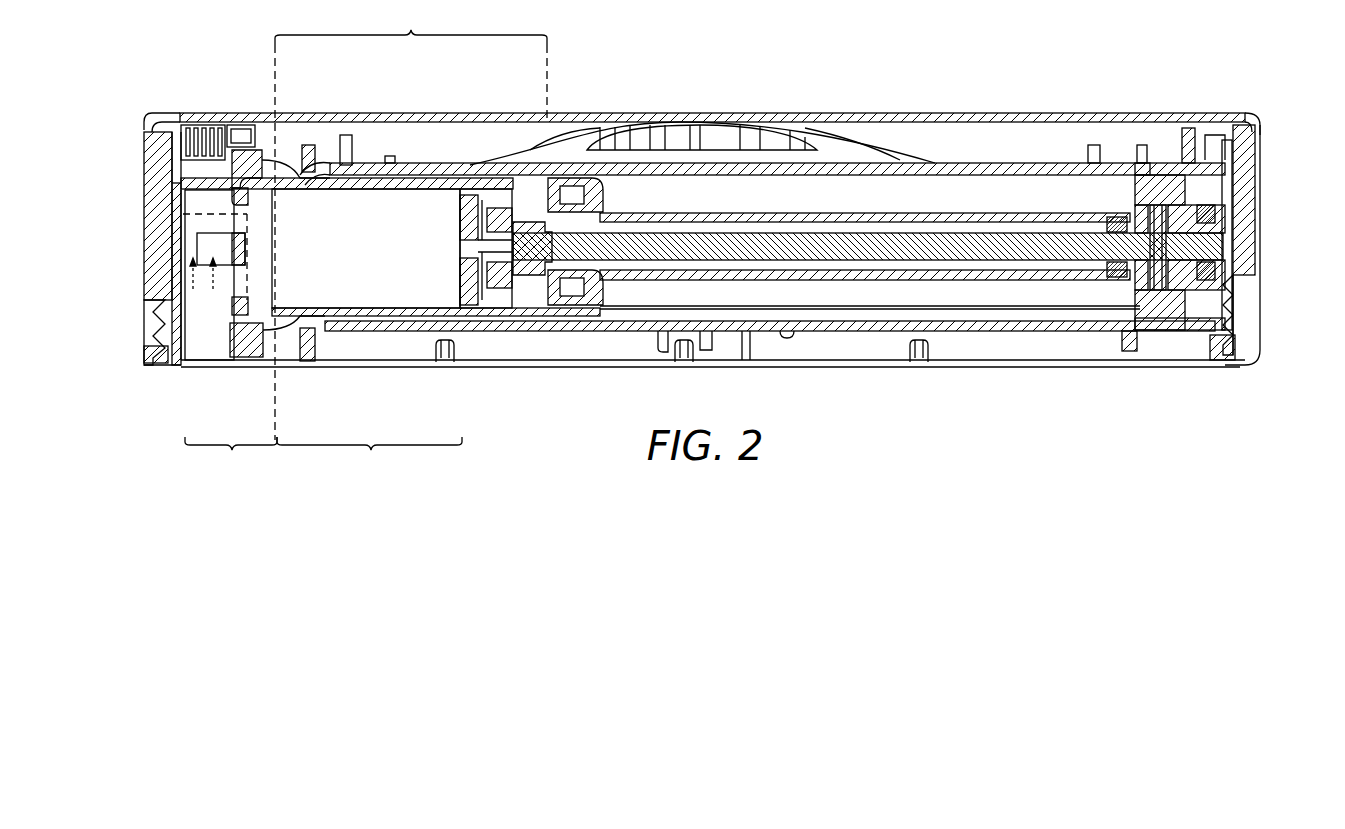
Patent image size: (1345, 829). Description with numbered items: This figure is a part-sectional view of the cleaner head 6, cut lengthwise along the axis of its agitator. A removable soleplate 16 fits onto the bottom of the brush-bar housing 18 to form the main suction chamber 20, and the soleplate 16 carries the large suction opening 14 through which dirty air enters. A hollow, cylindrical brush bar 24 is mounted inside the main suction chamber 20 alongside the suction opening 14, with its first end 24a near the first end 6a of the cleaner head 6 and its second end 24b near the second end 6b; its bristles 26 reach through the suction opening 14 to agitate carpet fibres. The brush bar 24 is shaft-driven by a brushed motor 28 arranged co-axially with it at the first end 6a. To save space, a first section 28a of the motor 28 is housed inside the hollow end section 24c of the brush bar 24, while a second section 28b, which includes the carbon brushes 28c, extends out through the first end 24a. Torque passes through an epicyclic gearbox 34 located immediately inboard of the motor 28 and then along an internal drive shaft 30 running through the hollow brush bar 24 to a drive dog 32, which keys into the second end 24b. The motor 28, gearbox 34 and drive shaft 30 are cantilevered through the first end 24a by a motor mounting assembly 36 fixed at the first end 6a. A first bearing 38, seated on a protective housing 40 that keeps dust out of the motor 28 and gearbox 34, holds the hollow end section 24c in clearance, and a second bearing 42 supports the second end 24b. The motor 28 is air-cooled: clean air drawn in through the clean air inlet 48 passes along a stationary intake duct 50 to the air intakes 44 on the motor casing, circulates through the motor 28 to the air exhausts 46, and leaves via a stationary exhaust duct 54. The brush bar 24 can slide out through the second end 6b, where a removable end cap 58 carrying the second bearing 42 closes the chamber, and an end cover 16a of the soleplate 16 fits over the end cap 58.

The cleaner head 6 is at (930, 58).
The first end of the cleaner head 6a is at (126, 162).
The second end of the cleaner head 6b is at (1275, 138).
The suction opening 14 is at (1150, 368).
The removable soleplate 16 is at (144, 330).
The end cover 16a is at (1262, 158).
The brush-bar housing 18 is at (165, 120).
The main suction chamber 20 is at (1003, 118).
The brush bar 24 is at (848, 170).
The first end of the brush bar 24a is at (330, 163).
The second end of the brush bar 24b is at (1163, 183).
The hollow end section of the brush bar 24c is at (411, 221).
The bristles 26 is at (740, 343).
The brushed motor 28 is at (378, 293).
The first section of the motor 28a is at (369, 455).
The second section of the motor 28b is at (231, 455).
The carbon brushes 28c is at (182, 257).
The drive shaft 30 is at (867, 250).
The drive dog 32 is at (1150, 267).
The epicyclic gearbox 34 is at (508, 307).
The motor mounting assembly 36 is at (262, 150).
The first bearing 38 is at (575, 306).
The protective housing 40 is at (538, 306).
The second bearing 42 is at (1223, 220).
The air intakes 44 is at (243, 200).
The air exhausts 46 is at (245, 250).
The clean air inlet 48 is at (189, 125).
The stationary intake duct 50 is at (228, 147).
The stationary exhaust duct 54 is at (208, 343).
The removable end cap 58 is at (1218, 198).